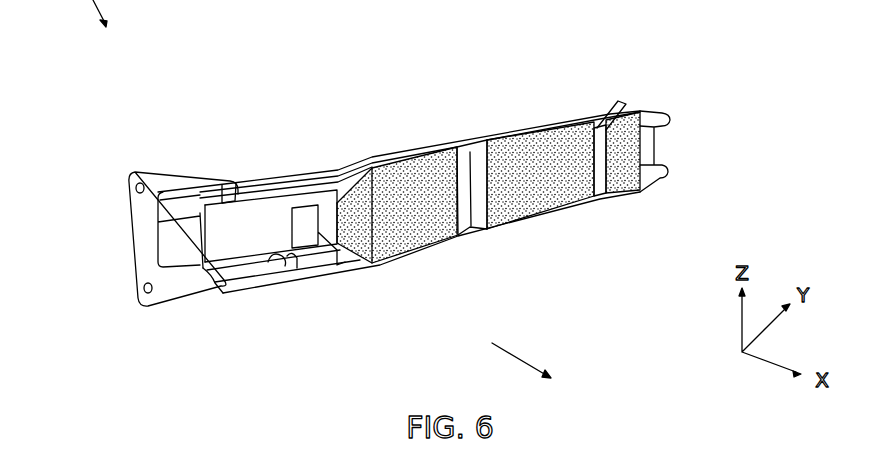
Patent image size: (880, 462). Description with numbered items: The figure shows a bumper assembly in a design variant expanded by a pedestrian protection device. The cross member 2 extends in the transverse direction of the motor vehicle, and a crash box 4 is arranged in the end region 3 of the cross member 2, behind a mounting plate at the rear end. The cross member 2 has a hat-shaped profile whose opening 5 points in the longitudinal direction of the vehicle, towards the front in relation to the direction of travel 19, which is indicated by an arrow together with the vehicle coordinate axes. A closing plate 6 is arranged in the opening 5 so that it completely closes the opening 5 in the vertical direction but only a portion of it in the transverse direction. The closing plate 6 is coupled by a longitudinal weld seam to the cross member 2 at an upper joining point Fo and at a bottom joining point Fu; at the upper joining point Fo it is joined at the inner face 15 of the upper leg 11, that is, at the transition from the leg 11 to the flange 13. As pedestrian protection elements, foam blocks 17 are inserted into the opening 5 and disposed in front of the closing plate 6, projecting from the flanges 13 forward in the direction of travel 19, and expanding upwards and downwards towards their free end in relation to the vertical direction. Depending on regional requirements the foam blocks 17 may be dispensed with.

The cross member 2 is at (347, 166).
The end region 3 is at (242, 229).
The crash box 4 is at (178, 249).
The opening 5 is at (318, 235).
The closing plate 6 is at (472, 162).
The upper leg 11 is at (203, 268).
The flange 13 is at (273, 198).
The inner face 15 is at (287, 257).
The foam block 17 is at (423, 192).
The direction of travel 19 is at (521, 367).
The upper joining point Fo is at (464, 168).
The bottom joining point Fu is at (466, 240).